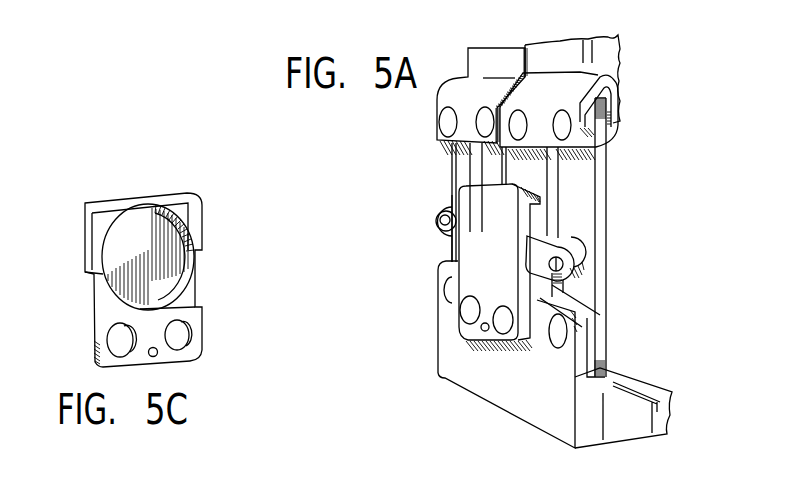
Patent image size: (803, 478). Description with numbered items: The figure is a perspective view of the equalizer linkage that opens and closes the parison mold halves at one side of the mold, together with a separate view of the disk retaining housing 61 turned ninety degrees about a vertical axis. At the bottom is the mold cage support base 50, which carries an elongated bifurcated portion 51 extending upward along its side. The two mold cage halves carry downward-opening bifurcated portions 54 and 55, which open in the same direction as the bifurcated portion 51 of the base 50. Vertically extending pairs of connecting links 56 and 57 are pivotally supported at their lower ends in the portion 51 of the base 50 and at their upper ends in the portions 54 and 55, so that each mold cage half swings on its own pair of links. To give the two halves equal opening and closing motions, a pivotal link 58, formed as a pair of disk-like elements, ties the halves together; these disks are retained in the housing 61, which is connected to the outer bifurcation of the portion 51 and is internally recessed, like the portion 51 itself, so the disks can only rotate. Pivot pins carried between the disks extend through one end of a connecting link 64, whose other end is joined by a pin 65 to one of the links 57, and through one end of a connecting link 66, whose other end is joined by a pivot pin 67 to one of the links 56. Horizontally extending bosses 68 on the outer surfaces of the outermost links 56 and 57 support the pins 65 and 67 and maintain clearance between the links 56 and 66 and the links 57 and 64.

In FIG. 5A, the mold cage support base 50 is at (543, 423).
In FIG. 5A, the elongated bifurcated portion 51 is at (570, 357).
In FIG. 5A, the bifurcated portion 54 is at (480, 50).
In FIG. 5A, the bifurcated portion 55 is at (611, 50).
In FIG. 5A, the connecting links 56 is at (500, 163).
In FIG. 5A, the connecting links 57 is at (572, 168).
In FIG. 5A, the pivotal link 58 is at (452, 250).
In FIG. 5A, the housing 61 is at (499, 257).
In FIG. 5C, the housing 61 is at (88, 302).
In FIG. 5A, the connecting link 64 is at (587, 296).
In FIG. 5A, the pin 65 is at (563, 267).
In FIG. 5A, the connecting link 66 is at (452, 236).
In FIG. 5A, the pivot pin 67 is at (447, 222).
In FIG. 5A, the bosses 68 is at (447, 203).